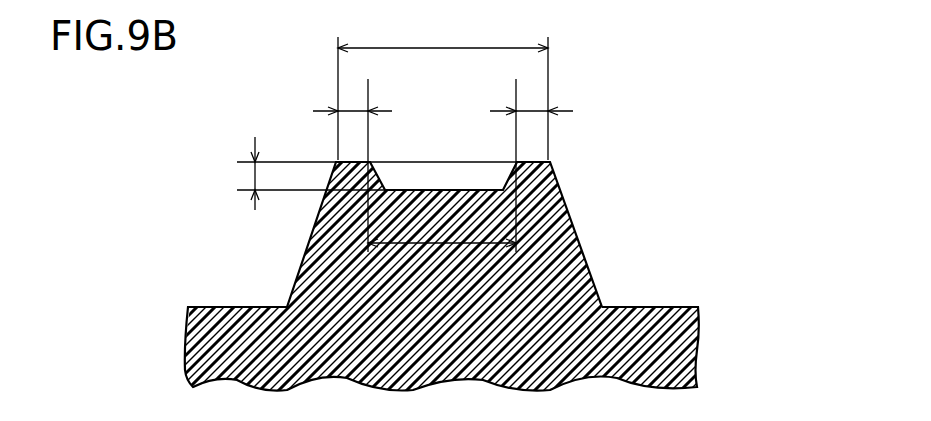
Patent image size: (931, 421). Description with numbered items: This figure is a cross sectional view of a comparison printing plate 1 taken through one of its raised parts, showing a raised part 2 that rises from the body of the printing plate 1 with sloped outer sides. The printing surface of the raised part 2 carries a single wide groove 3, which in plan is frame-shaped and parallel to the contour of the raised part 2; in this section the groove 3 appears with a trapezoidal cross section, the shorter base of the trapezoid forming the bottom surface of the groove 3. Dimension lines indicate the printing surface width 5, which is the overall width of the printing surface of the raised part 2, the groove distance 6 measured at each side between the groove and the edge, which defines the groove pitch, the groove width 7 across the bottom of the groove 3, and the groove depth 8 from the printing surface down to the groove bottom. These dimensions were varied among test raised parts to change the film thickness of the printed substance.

The printing plate 1 is at (693, 352).
The raised part 2 is at (572, 278).
The groove 3 is at (440, 173).
The printing surface width 5 is at (443, 48).
The groove distance 6 is at (353, 111).
The groove width 7 is at (445, 245).
The groove depth 8 is at (255, 178).